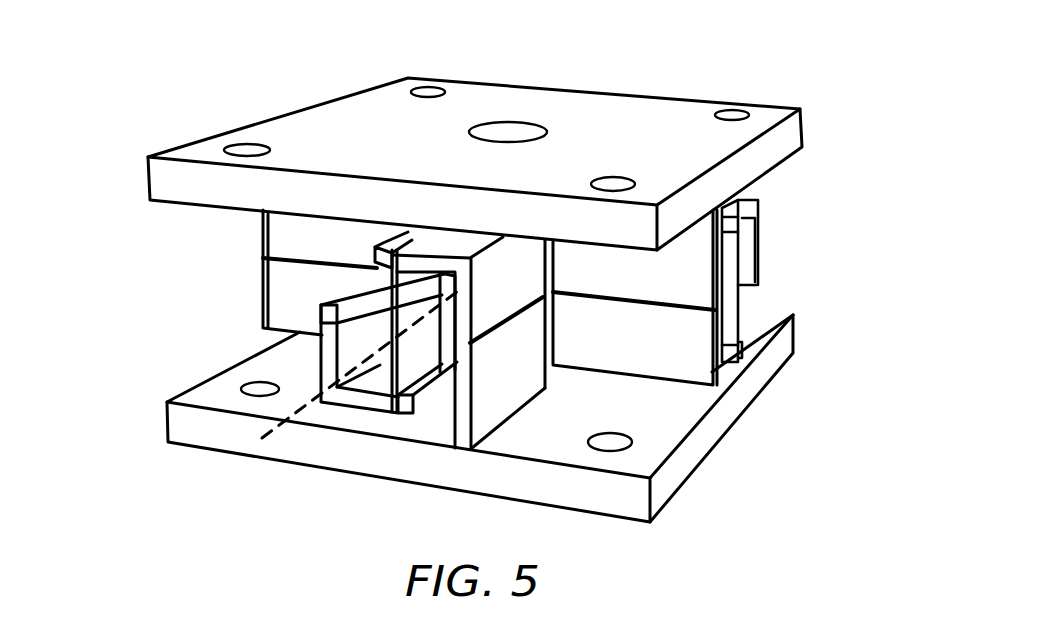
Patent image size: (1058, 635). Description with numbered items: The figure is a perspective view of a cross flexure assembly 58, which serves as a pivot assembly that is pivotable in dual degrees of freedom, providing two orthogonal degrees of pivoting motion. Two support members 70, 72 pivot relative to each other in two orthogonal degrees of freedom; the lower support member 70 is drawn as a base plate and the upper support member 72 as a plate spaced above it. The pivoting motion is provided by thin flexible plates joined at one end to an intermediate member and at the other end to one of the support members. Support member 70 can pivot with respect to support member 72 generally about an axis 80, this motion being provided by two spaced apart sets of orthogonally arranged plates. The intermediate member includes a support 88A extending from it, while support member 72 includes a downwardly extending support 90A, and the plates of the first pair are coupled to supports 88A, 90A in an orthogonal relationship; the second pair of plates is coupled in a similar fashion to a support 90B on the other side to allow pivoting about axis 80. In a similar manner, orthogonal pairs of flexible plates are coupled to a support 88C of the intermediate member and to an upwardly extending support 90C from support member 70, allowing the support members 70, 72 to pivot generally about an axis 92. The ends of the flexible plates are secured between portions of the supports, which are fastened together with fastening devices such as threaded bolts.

The cross flexure assembly 58 is at (858, 104).
The support member 70 is at (748, 408).
The support member 72 is at (688, 93).
The axis 80 is at (780, 276).
The support 88A is at (760, 222).
The support 88C is at (320, 352).
The downwardly extending support 90A is at (738, 362).
The support 90B is at (270, 289).
The upwardly extending support 90C is at (463, 407).
The axis 92 is at (240, 452).